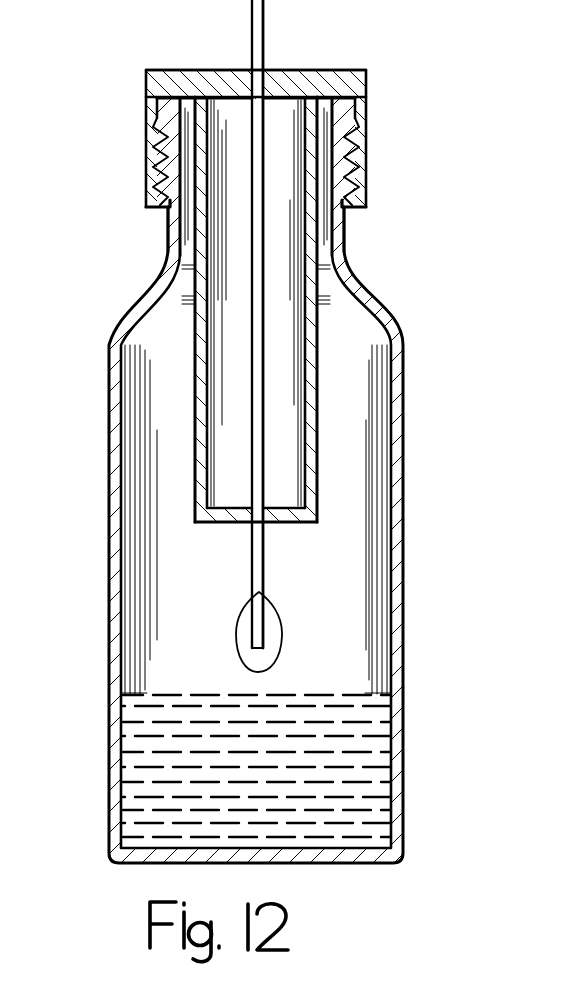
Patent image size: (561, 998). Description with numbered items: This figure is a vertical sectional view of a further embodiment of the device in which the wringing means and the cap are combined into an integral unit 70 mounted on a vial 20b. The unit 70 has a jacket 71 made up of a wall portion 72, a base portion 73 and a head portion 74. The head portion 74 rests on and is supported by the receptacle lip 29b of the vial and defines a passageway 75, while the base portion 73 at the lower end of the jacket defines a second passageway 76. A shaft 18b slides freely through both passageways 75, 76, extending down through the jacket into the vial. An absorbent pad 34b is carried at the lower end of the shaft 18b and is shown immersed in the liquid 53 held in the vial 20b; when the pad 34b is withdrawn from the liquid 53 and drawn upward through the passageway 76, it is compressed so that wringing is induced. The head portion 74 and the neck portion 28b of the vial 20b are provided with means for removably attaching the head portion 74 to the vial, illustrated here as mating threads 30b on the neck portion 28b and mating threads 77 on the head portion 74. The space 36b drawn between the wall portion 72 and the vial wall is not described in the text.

The integral unit 70 is at (413, 112).
The head portion 74 is at (325, 78).
The passageway 75 is at (264, 100).
The receptacle lip 29b is at (174, 97).
The mating threads 30b is at (156, 170).
The mating threads 77 is at (160, 197).
The neck portion 28b is at (168, 236).
The shaft 18b is at (262, 260).
The wall portion 72 is at (318, 381).
The annular space between tube and container wall 36b is at (340, 421).
The jacket 71 is at (321, 488).
The vial 20b is at (410, 556).
The passageway 76 is at (265, 523).
The base portion 73 is at (300, 523).
The absorbent pad 34b is at (273, 638).
The liquid 53 is at (130, 750).